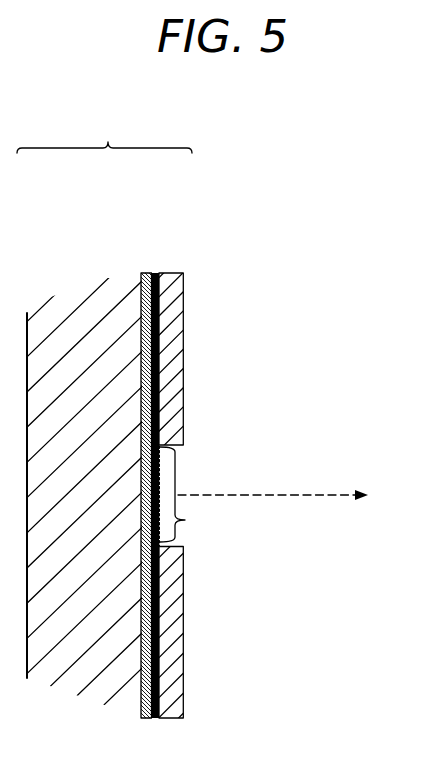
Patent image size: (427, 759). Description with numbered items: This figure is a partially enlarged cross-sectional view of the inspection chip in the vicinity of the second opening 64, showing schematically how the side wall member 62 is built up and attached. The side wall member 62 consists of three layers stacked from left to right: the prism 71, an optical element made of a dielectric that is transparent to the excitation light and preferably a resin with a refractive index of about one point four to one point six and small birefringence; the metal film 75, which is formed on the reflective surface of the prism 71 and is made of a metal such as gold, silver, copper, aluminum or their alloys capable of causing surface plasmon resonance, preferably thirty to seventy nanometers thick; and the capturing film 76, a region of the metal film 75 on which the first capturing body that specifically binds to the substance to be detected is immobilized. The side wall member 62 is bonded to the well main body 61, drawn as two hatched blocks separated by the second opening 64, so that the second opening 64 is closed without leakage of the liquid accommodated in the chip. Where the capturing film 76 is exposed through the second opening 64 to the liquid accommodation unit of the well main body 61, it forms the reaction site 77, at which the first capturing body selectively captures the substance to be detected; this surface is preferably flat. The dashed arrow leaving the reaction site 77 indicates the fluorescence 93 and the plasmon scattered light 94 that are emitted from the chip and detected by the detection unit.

The prism 71 is at (72, 303).
The side wall member 62 is at (104, 133).
The metal film 75 is at (147, 274).
The capturing film 76 is at (152, 273).
The well main body 61 is at (184, 350).
The second opening 64 is at (188, 461).
The reaction site 77 is at (188, 494).
The fluorescence 93 is at (273, 447).
The plasmon scattered light 94 is at (297, 495).